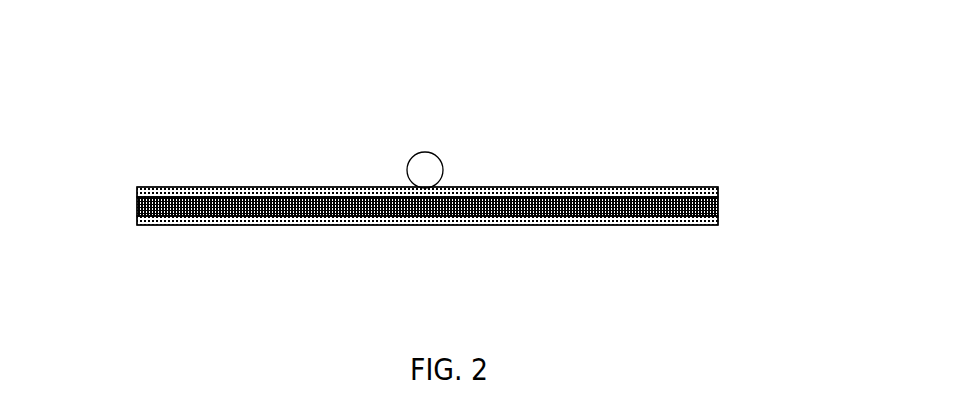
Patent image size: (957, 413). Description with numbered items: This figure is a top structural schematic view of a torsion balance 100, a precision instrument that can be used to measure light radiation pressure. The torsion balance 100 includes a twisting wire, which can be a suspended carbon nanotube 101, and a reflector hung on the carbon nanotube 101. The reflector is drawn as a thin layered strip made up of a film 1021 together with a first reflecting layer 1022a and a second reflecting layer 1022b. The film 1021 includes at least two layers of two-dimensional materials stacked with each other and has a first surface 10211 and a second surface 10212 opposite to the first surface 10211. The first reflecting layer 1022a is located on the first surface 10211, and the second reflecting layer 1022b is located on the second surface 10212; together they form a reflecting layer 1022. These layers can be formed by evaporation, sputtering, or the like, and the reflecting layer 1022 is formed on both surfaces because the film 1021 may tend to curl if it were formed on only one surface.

The torsion balance 100 is at (463, 149).
The carbon nanotube 101 is at (423, 173).
The film 1021 is at (377, 212).
The first surface 10211 is at (235, 197).
The second surface 10212 is at (190, 213).
The reflecting layer 1022 is at (513, 206).
The first reflecting layer 1022a is at (692, 190).
The second reflecting layer 1022b is at (690, 218).